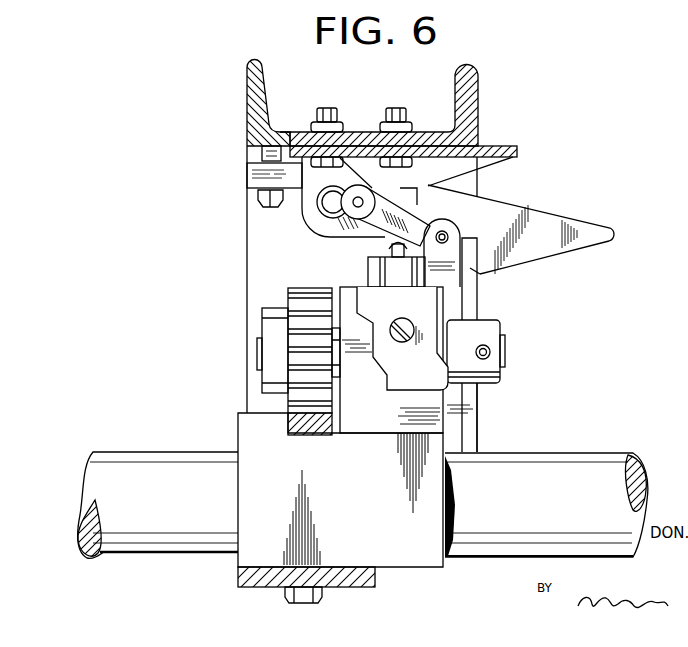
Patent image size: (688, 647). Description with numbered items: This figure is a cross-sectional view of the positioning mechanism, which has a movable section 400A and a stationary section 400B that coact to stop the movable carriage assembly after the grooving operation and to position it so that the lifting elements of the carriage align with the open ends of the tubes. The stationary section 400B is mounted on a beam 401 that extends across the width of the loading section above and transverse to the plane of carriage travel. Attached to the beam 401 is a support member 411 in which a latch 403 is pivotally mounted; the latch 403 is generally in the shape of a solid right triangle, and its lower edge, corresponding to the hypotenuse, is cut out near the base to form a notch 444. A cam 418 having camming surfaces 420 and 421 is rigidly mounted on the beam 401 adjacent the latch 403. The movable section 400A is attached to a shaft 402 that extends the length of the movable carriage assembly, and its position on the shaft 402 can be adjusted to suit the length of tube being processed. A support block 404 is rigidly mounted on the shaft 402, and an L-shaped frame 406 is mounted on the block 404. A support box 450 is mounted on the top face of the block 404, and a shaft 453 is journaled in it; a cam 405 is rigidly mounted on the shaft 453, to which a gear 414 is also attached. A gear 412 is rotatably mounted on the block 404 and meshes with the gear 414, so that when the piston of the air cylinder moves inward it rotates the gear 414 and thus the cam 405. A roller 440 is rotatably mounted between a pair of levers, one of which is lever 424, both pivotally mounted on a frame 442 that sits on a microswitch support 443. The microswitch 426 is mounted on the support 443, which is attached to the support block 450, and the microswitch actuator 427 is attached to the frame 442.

The beam 401 is at (470, 93).
The cam 418 is at (482, 151).
The camming surface 421 is at (482, 168).
The latch 403 is at (612, 228).
The roller 440 is at (372, 188).
The camming surface 420 is at (417, 206).
The support member 411 is at (312, 217).
The lever 424 is at (373, 233).
The microswitch actuator 427 is at (388, 242).
The microswitch 426 is at (395, 263).
The frame 442 is at (460, 290).
The notch 444 is at (475, 262).
The cam 405 is at (462, 300).
The shaft 453 is at (505, 352).
The microswitch support 443 is at (434, 384).
The support box 450 is at (396, 420).
The gear 414 is at (312, 290).
The gear 412 is at (302, 437).
The support block 404 is at (386, 505).
The shaft 402 is at (152, 547).
The L-shaped frame 406 is at (343, 580).
The movable section 400A is at (477, 417).
The stationary section 400B is at (247, 148).